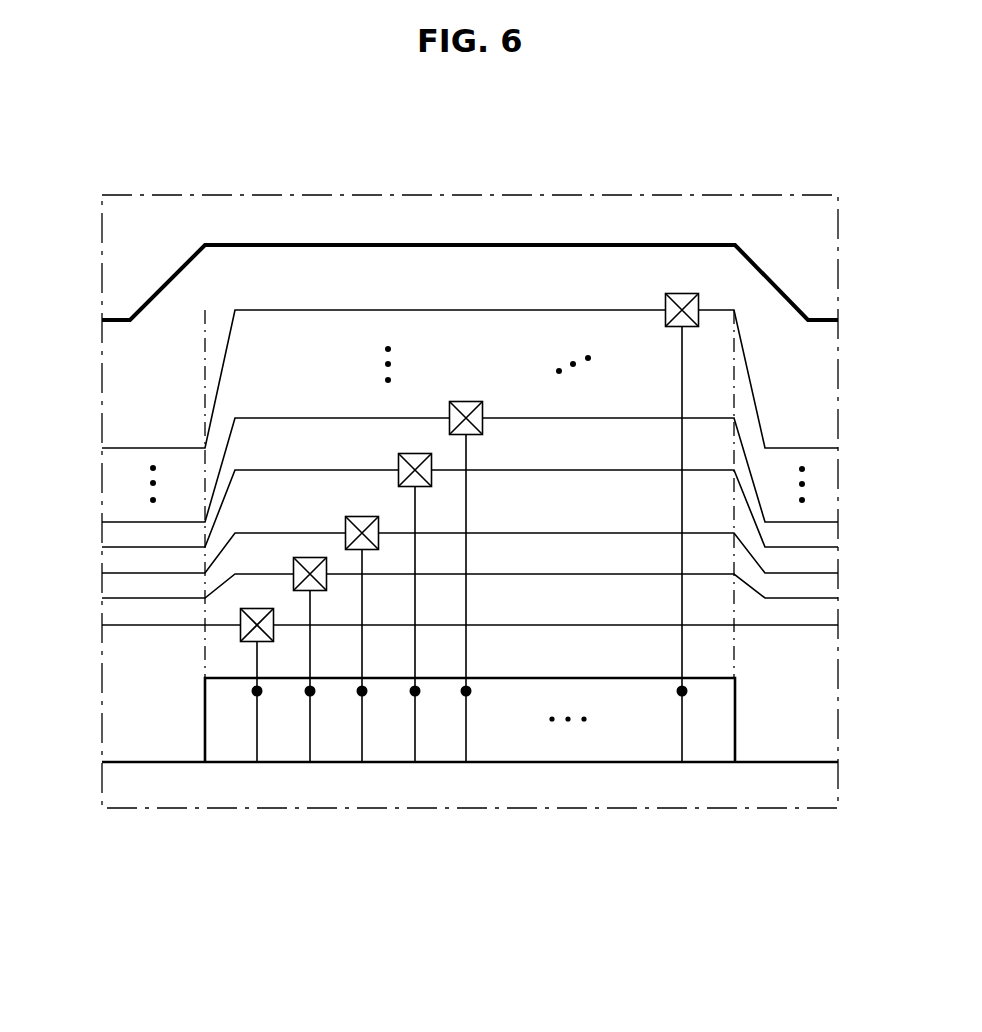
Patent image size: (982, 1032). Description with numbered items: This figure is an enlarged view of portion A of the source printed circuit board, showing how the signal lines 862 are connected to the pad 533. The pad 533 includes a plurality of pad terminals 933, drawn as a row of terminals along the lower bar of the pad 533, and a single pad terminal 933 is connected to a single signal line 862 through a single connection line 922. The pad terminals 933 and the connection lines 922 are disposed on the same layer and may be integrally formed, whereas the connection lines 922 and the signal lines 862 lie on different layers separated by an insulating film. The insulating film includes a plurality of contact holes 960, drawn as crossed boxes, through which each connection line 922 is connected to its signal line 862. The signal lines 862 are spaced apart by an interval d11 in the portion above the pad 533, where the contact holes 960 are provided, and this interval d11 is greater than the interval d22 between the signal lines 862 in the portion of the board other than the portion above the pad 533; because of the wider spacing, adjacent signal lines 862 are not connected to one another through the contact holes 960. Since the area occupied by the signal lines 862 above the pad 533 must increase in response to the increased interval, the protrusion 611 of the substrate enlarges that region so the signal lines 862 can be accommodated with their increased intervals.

The protrusion 611 is at (266, 245).
The contact hole 960 is at (241, 632).
The connection line 922 is at (256, 660).
The pad terminal 933 is at (257, 732).
The signal line 862 is at (657, 418).
The pad 533 is at (736, 714).
The portion A is at (466, 195).
The interval d11 is at (309, 470).
The interval d22 is at (139, 522).